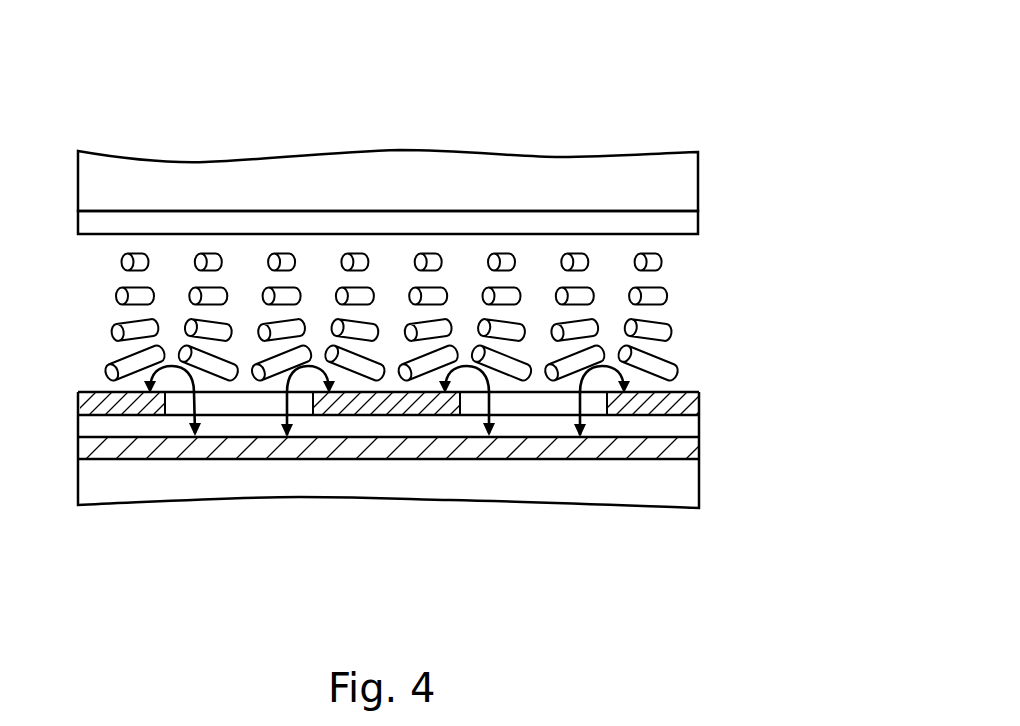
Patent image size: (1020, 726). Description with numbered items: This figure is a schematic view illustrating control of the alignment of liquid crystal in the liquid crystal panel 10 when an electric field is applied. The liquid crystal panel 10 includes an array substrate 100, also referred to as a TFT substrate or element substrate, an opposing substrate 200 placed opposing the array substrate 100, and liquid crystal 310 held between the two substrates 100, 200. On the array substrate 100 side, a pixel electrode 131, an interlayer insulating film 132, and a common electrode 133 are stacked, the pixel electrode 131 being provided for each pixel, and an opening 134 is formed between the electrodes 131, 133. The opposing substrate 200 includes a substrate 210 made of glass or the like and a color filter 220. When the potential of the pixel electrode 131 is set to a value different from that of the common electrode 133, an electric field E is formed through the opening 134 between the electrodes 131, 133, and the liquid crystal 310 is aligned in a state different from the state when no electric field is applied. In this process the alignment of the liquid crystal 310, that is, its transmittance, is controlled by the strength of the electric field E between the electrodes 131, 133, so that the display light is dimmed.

The liquid crystal panel 10 is at (198, 99).
The array substrate 100 is at (667, 520).
The pixel electrode 131 is at (688, 450).
The interlayer insulating film 132 is at (688, 430).
The common electrode 133 is at (685, 403).
The opening 134 is at (247, 414).
The opposing substrate 200 is at (658, 137).
The substrate 210 is at (687, 182).
The color filter 220 is at (690, 227).
The liquid crystal 310 is at (670, 332).
The electric field E is at (197, 405).